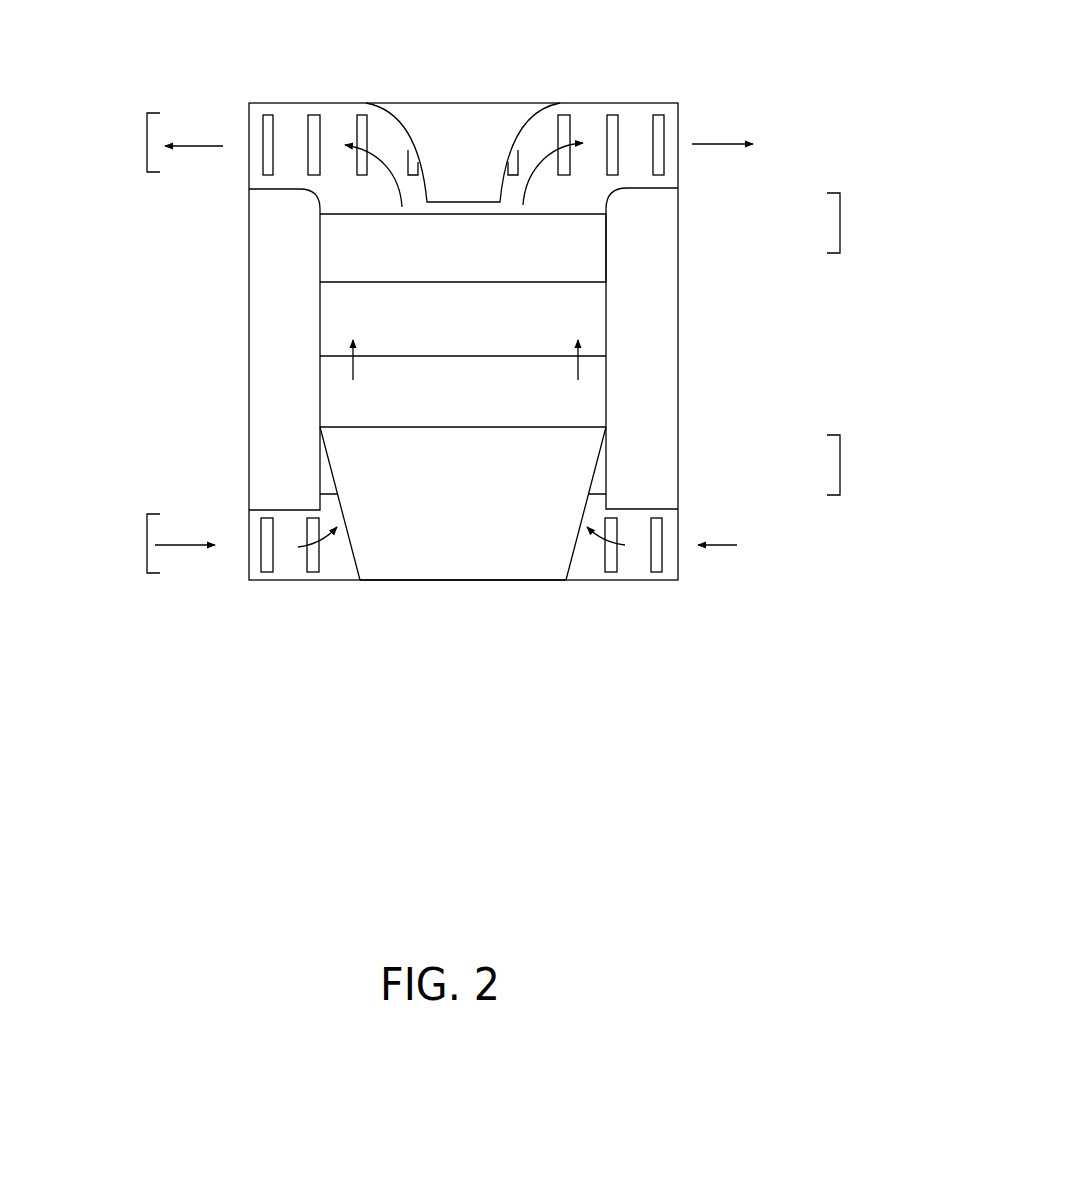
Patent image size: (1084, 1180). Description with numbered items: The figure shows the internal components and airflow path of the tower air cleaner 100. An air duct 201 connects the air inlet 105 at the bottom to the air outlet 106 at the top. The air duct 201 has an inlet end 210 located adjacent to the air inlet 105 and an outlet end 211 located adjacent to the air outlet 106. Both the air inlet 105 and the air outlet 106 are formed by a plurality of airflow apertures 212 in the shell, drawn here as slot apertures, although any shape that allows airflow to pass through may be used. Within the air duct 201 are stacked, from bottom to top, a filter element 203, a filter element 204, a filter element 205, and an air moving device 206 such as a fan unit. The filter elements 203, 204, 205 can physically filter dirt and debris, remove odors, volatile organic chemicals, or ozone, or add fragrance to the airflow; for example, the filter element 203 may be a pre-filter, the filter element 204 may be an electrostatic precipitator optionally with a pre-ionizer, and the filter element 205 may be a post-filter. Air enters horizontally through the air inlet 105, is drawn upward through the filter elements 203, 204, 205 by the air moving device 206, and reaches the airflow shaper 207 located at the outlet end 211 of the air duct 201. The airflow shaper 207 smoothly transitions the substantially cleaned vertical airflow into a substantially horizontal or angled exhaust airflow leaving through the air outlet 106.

The tower air cleaner 100 is at (503, 405).
The air inlet 105 is at (145, 545).
The air outlet 106 is at (145, 145).
The air duct 201 is at (606, 458).
The filter element 203 is at (347, 462).
The filter element 204 is at (330, 385).
The filter element 205 is at (330, 320).
The air moving device 206 is at (330, 247).
The airflow shaper 207 is at (465, 130).
The inlet end 210 is at (840, 465).
The outlet end 211 is at (840, 225).
The airflow apertures 212 is at (620, 130).